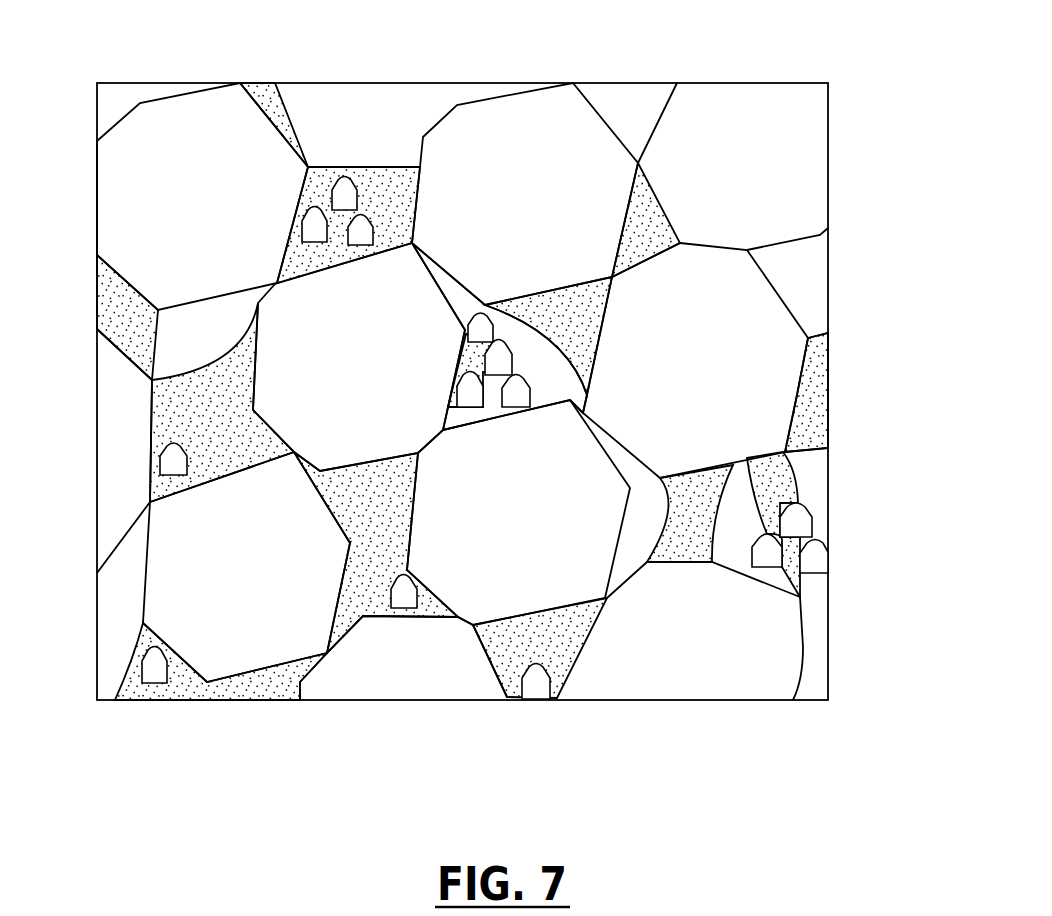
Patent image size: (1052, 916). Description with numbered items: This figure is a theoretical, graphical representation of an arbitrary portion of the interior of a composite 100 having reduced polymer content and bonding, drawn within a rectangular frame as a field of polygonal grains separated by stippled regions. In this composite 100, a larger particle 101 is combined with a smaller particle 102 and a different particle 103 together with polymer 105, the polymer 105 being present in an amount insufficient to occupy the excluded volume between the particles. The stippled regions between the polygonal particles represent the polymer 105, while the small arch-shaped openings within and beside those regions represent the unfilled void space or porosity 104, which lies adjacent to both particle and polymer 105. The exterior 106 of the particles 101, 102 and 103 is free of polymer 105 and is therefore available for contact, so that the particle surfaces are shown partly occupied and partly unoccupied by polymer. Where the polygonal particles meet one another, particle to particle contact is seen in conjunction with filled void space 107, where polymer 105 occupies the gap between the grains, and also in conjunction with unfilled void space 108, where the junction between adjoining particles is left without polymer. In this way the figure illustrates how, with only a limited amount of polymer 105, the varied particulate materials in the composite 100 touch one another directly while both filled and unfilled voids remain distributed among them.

The composite 100 is at (887, 205).
The larger particle 101 is at (123, 477).
The smaller particle 102 is at (812, 557).
The different particle 103 is at (798, 523).
The unfilled void space or porosity 104 is at (368, 120).
The polymer 105 is at (663, 205).
The exterior of particles 106 is at (800, 322).
The filled void space 107 is at (332, 658).
The unfilled void space 108 is at (747, 250).